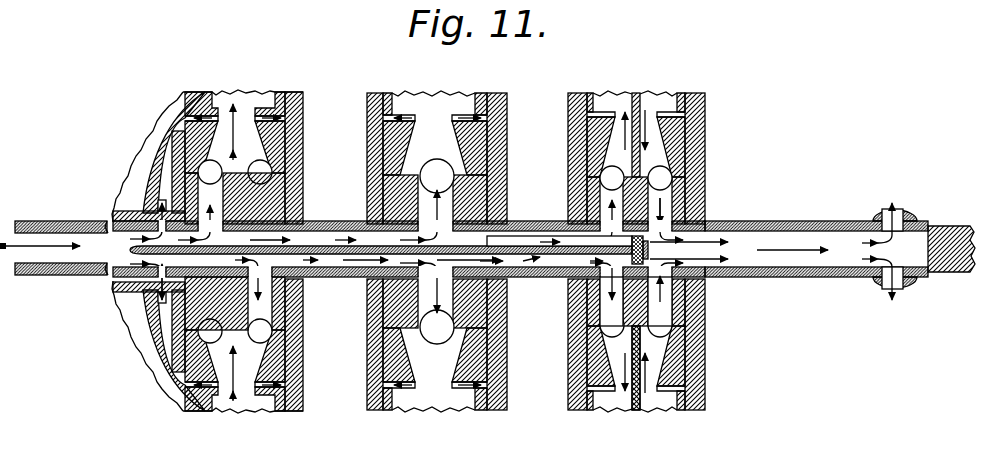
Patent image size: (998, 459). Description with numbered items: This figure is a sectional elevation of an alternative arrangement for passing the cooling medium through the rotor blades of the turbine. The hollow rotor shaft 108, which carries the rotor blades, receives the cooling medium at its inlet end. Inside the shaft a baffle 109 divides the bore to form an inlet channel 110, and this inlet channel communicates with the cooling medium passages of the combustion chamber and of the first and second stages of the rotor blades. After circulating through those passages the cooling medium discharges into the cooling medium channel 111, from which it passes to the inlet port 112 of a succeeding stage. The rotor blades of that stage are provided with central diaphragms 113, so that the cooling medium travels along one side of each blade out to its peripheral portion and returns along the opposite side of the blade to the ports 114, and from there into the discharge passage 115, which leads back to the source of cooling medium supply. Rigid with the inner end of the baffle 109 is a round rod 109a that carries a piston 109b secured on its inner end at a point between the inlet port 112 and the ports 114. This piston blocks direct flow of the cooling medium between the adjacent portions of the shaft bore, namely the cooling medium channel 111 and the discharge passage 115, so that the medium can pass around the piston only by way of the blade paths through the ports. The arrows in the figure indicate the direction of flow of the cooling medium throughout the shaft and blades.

The rotor shaft 108 is at (72, 268).
The baffle 109 is at (338, 255).
The round rod 109a is at (519, 244).
The piston 109b is at (650, 247).
The inlet channel 110 is at (299, 227).
The cooling medium channel 111 is at (553, 262).
The inlet port 112 is at (608, 309).
The central diaphragm 113 is at (633, 411).
The port 114 is at (668, 274).
The discharge passage 115 is at (800, 262).